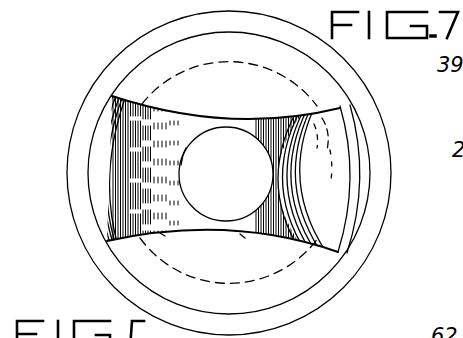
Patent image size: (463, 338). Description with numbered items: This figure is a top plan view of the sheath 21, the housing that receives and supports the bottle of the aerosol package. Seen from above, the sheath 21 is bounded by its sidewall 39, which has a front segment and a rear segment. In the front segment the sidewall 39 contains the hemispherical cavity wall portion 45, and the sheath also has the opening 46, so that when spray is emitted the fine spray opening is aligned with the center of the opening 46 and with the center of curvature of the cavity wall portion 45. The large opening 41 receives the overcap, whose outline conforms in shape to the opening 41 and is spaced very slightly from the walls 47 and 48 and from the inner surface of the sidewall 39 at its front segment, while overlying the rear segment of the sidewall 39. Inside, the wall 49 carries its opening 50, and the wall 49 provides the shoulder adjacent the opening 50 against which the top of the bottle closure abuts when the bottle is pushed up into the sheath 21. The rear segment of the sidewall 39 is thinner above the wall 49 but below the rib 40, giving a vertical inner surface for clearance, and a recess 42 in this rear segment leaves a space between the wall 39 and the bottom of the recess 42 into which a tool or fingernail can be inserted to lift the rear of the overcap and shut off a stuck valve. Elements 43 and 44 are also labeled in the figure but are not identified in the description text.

The sheath 21 is at (70, 117).
The sidewall 39 is at (108, 66).
The rib 40 is at (236, 267).
The opening 41 is at (183, 118).
The recess 42 is at (110, 240).
The spacer strip 43 is at (343, 139).
The first roller 44 is at (104, 156).
The hemispherical cavity wall portion 45 is at (334, 200).
The opening 46 is at (273, 164).
The wall 47 is at (243, 237).
The wall 48 is at (252, 116).
The wall 49 is at (160, 236).
The opening 50 is at (187, 148).